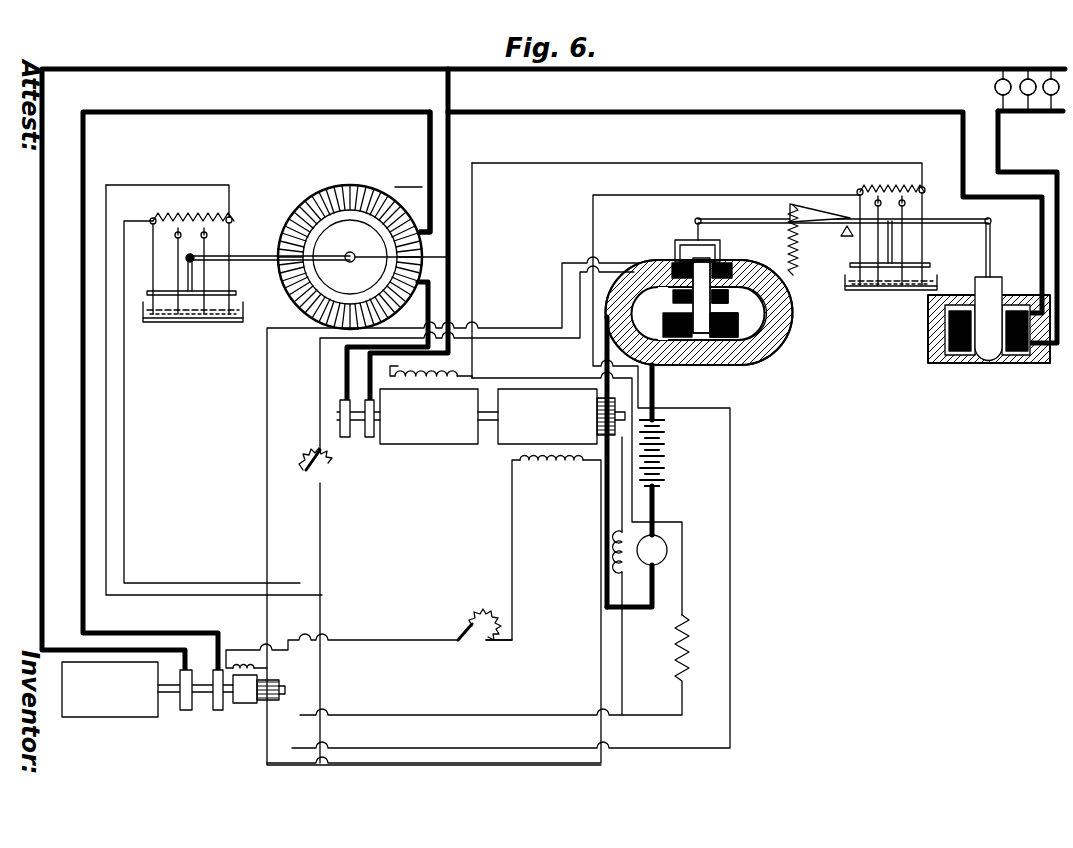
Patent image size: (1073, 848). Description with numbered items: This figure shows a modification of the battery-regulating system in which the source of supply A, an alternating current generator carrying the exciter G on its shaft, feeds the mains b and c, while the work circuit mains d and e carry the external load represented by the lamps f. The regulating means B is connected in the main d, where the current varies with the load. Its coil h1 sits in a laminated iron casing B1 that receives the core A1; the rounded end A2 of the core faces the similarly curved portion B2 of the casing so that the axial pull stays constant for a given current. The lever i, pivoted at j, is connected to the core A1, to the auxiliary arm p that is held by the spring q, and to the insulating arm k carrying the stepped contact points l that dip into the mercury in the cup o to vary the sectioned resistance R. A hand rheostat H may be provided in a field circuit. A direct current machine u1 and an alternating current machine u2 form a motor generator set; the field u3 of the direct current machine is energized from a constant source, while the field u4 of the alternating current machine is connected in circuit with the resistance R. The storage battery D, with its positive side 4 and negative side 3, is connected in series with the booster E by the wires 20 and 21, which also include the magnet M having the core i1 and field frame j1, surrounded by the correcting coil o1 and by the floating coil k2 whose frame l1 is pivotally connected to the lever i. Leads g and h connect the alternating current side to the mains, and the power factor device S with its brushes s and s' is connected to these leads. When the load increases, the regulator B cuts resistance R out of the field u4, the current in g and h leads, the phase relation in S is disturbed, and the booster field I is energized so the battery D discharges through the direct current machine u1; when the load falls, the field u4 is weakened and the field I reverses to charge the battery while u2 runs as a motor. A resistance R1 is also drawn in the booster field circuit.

The main c is at (322, 72).
The main b is at (345, 112).
The main of work circuit e is at (1036, 69).
The main of work circuit d is at (1003, 95).
The lamps f is at (1028, 95).
The power factor device S is at (363, 242).
The wheel contact s is at (407, 183).
The wheel contact brush s' is at (419, 172).
The lead g is at (420, 292).
The variable resistance R is at (190, 222).
The arm of insulation k is at (236, 294).
The contact points l is at (194, 316).
The cup o is at (216, 322).
The lead h is at (450, 300).
The wire 20 is at (593, 353).
The field of direct current machine u3 is at (417, 416).
The direct current machine u1 is at (561, 460).
The field of alternating current machine u4 is at (536, 480).
The alternating current machine u2 is at (434, 610).
The storage battery D is at (665, 450).
The positive side of battery 4 is at (686, 440).
The negative side of battery 3 is at (686, 502).
The booster E is at (667, 548).
The field of booster I is at (615, 550).
The wire 21 is at (604, 606).
The resistance R1 is at (511, 665).
The hand rheostat H is at (328, 472).
The magnet M is at (699, 327).
The yoke k2 is at (676, 250).
The frame of floating coil l1 is at (690, 255).
The lever i is at (760, 220).
The auxiliary arm p is at (825, 214).
The spring q is at (800, 238).
The pivot j is at (847, 238).
The regulating means B is at (706, 312).
The correcting coil o1 is at (728, 302).
The field frame j1 is at (768, 352).
The core i1 is at (702, 330).
The laminated iron casing B1 is at (1030, 365).
The rounded end of core A2 is at (985, 355).
The curved portion of casing B2 is at (1000, 365).
The core A1 is at (992, 290).
The coil h1 is at (930, 340).
The source of supply A is at (147, 689).
The exciter G is at (245, 700).